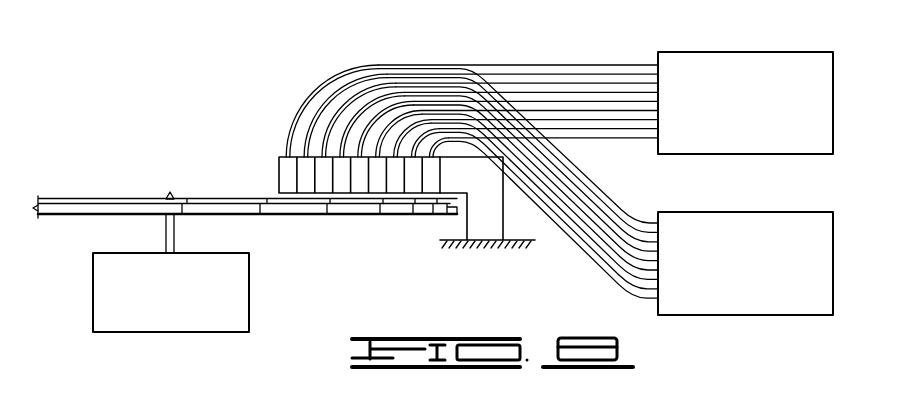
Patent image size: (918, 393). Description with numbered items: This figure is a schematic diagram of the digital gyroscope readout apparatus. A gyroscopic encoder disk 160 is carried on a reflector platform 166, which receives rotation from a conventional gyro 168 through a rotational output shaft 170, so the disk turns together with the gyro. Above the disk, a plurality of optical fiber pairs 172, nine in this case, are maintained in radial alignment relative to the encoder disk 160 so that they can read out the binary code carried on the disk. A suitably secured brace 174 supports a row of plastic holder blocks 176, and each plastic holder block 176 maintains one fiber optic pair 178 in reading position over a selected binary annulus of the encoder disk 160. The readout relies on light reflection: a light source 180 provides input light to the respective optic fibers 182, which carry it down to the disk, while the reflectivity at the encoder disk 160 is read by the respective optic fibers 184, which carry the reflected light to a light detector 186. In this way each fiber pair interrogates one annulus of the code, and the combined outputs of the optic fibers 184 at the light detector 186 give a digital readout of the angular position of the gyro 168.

The gyroscopic encoder disk 160 is at (113, 198).
The reflector platform 166 is at (69, 208).
The gyro 168 is at (250, 278).
The rotational output shaft 170 is at (172, 237).
The optical fiber pairs 172 is at (472, 150).
The brace 174 is at (487, 227).
The plastic holder blocks 176 is at (380, 182).
The fiber optic pair 178 is at (337, 65).
The light source 180 is at (733, 52).
The optic fibers 182 is at (557, 63).
The optic fibers 184 is at (595, 173).
The light detector 186 is at (745, 212).